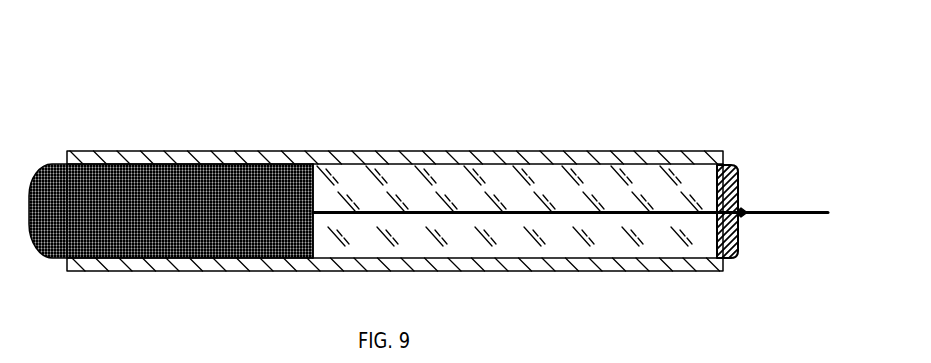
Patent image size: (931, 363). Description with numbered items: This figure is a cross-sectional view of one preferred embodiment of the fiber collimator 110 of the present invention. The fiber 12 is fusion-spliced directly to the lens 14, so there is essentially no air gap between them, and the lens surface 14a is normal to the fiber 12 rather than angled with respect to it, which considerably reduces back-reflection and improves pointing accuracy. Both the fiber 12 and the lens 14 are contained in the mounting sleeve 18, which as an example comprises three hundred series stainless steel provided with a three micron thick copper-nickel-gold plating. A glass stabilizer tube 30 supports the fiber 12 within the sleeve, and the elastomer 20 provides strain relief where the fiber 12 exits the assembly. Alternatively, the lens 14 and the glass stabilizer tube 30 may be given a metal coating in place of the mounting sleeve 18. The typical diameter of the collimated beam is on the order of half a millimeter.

The fiber collimator 110 is at (362, 97).
The fiber 12 is at (822, 212).
The lens 14 is at (240, 187).
The lens surface 14a is at (314, 228).
The mounting sleeve 18 is at (540, 152).
The elastomer 20 is at (738, 234).
The glass stabilizer tube 30 is at (520, 247).